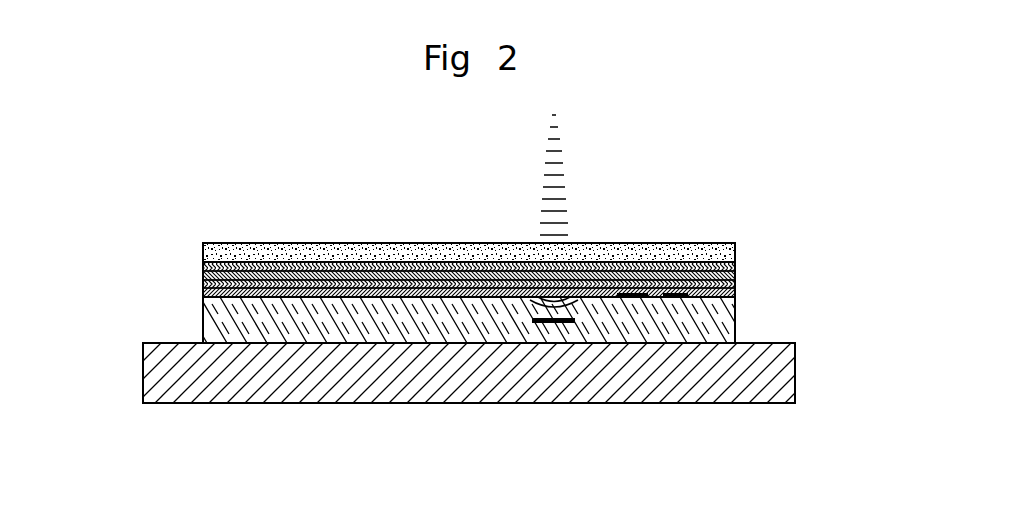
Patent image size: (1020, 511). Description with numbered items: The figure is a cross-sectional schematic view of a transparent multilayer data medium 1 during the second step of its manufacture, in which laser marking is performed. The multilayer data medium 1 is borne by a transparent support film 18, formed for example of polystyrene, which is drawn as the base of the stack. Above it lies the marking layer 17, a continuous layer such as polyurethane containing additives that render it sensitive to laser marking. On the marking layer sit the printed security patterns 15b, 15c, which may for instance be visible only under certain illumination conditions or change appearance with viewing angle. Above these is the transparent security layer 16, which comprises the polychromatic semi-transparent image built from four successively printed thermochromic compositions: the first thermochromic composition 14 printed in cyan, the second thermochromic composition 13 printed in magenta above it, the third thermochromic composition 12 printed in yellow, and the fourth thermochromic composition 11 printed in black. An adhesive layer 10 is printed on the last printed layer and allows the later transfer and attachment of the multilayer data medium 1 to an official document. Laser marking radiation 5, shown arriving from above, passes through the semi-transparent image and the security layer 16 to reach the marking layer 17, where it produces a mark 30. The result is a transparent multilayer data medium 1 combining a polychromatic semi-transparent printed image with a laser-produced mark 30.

The multilayer data medium 1 is at (136, 262).
The marking radiation 5 is at (552, 210).
The adhesive layer 10 is at (382, 243).
The fourth thermochromic composition 11 is at (701, 266).
The third thermochromic composition 12 is at (706, 260).
The second thermochromic composition 13 is at (733, 284).
The first thermochromic composition 14 is at (733, 313).
The printed security pattern 15b is at (633, 297).
The printed security pattern 15c is at (675, 297).
The transparent security layer 16 is at (196, 262).
The marking layer 17 is at (713, 330).
The support film 18 is at (160, 372).
The mark 30 is at (545, 323).